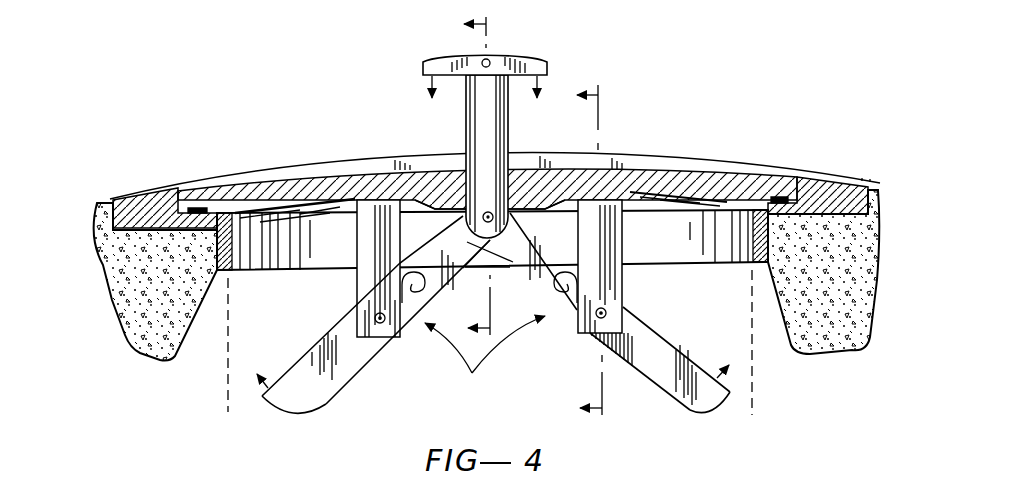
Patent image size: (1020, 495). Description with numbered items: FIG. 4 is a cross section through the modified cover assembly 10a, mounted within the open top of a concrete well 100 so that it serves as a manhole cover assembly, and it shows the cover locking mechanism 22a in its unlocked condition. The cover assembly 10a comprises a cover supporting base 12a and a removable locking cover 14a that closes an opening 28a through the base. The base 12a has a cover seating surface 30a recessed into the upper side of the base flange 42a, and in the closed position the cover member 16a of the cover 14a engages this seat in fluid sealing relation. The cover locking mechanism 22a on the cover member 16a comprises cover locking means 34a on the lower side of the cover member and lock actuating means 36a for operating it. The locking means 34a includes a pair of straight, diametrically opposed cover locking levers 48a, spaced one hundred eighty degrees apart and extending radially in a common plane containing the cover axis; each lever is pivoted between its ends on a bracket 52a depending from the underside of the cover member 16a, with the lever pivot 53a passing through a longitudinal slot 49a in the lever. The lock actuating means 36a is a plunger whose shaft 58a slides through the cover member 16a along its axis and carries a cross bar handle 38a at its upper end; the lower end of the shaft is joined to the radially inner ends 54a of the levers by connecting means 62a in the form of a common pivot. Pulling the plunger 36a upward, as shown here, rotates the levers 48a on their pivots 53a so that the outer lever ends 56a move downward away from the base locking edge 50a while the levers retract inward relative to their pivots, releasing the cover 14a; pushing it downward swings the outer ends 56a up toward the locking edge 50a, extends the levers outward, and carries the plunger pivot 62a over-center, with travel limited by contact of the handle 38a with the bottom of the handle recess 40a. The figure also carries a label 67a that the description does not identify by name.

The cover assembly 10a is at (680, 70).
The cover supporting base 12a is at (818, 175).
The removable locking cover 14a is at (197, 180).
The cover member 16a is at (739, 141).
The cover locking mechanism 22a is at (462, 152).
The opening 28a is at (242, 271).
The cover seating surface 30a is at (218, 212).
The cover locking means 34a is at (358, 380).
The lock actuating means 36a is at (463, 114).
The cross bar handle 38a is at (547, 72).
The handle recess 40a is at (636, 160).
The base flange 42a is at (118, 236).
The cover locking levers 48a is at (328, 406).
The longitudinal slot 49a is at (426, 305).
The base locking edge 50a is at (292, 270).
The brackets 52a is at (357, 290).
The lever pivots 53a is at (384, 324).
The radially inner ends 54a is at (498, 262).
The outer lever ends 56a is at (284, 406).
The shaft 58a is at (510, 118).
The connecting means 62a is at (495, 217).
The arm motion direction 67a is at (485, 358).
The concrete wells 100 is at (135, 352).